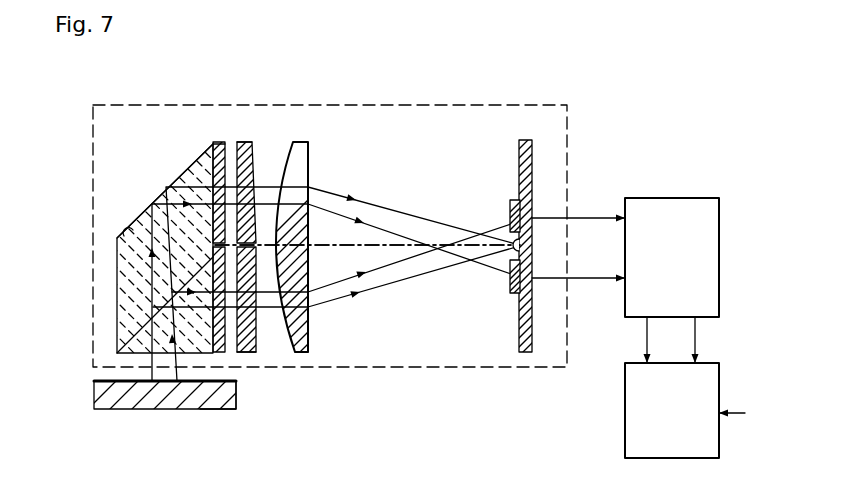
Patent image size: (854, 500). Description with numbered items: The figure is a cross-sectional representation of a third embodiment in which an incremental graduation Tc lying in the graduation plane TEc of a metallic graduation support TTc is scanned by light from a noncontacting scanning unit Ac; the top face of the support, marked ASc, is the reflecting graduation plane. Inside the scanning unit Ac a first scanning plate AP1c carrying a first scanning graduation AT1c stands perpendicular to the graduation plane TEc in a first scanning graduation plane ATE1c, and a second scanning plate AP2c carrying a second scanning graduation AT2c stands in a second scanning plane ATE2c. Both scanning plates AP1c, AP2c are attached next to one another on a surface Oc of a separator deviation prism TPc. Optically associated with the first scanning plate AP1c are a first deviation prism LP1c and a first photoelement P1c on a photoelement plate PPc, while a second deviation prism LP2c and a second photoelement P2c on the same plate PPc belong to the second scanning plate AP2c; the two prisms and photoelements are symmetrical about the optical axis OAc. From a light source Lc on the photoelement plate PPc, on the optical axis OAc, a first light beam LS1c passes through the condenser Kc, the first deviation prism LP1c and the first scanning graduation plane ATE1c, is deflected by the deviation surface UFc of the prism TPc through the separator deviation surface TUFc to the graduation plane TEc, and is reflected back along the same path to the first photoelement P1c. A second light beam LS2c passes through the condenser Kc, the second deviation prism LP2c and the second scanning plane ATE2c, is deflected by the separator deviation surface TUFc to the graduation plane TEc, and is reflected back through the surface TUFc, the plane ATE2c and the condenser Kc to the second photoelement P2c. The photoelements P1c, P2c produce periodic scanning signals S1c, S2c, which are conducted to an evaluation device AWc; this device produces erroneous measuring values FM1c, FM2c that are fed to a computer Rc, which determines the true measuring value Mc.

The deviation surface UFc is at (115, 236).
The separator deviation prism TPc is at (128, 279).
The separator deviation surface TUFc is at (137, 322).
The graduation plane TEc is at (100, 380).
The emitting surface ASc is at (93, 410).
The incremental graduation Tc is at (157, 397).
The metallic graduation support TTc is at (220, 396).
The first scanning plate AP1c is at (213, 152).
The second scanning plate AP2c is at (225, 354).
The first scanning graduation AT1c is at (207, 178).
The second scanning graduation AT2c is at (257, 318).
The first scanning graduation plane ATE1c is at (227, 148).
The second scanning plane ATE2c is at (250, 353).
The first deviation prism LP1c is at (253, 143).
The second deviation prism LP2c is at (307, 322).
The condenser Kc is at (308, 124).
The surface Oc is at (214, 244).
The optical axis OAc is at (340, 245).
The first light beam LS1c is at (387, 238).
The second light beam LS2c is at (413, 252).
The noncontacting scanning unit Ac is at (461, 367).
The photoelement plate PPc is at (533, 155).
The first photoelement P1c is at (512, 294).
The second photoelement P2c is at (512, 208).
The light source Lc is at (513, 240).
The periodic scanning signal S1c is at (588, 278).
The periodic scanning signal S2c is at (592, 210).
The evaluation device AWc is at (672, 215).
The erroneous measuring value FM1c is at (647, 340).
The erroneous measuring value FM2c is at (695, 340).
The computer Rc is at (645, 408).
The true measuring value Mc is at (750, 415).